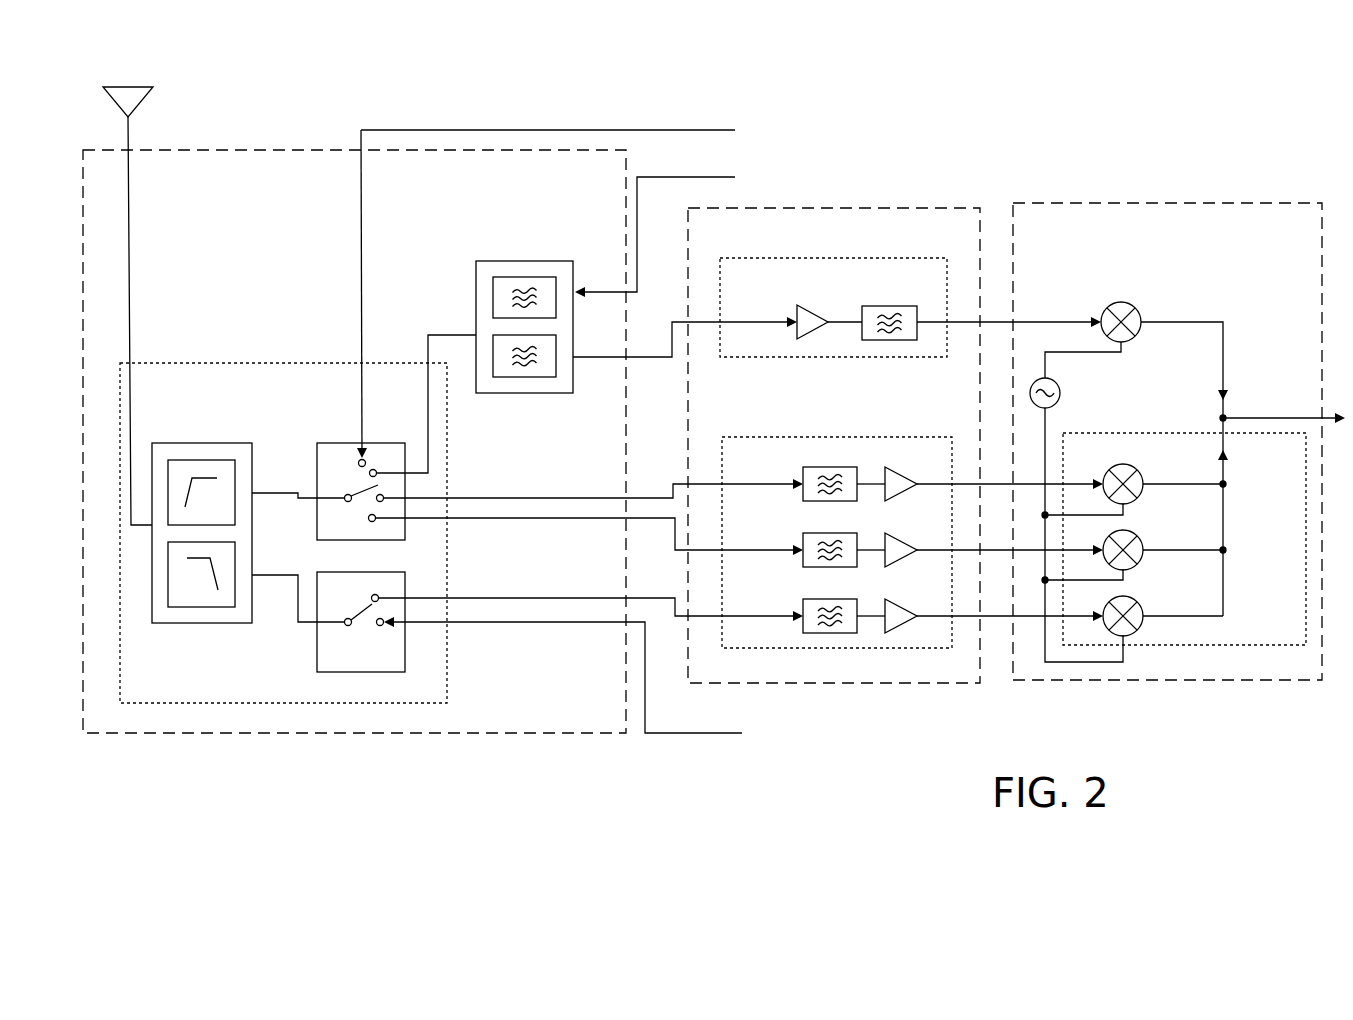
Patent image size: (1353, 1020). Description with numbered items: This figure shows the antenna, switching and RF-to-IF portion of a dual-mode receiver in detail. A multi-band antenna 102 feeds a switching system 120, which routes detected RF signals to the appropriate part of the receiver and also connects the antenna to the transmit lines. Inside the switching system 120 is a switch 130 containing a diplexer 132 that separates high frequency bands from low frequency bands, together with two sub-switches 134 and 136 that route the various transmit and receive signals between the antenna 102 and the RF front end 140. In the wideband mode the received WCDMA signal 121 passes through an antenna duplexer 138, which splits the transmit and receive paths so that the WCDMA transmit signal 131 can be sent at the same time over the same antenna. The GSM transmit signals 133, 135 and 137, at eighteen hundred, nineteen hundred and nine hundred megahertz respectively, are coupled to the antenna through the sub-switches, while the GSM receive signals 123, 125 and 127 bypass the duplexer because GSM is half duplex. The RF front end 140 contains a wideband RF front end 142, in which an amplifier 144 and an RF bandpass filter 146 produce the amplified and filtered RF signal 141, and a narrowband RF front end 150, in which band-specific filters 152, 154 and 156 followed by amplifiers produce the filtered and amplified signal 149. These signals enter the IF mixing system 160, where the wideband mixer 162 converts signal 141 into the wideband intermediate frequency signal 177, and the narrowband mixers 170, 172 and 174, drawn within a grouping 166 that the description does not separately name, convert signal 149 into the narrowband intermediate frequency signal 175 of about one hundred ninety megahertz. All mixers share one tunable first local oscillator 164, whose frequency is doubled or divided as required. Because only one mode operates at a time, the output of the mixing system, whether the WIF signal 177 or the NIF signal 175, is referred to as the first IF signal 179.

The multi-band antenna 102 is at (142, 98).
The switching system 120 is at (252, 150).
The received RF signal 121 is at (607, 357).
The 1800 MHz-band GSM signal 123 is at (573, 498).
The 1900 MHz-band GSM signal 125 is at (573, 518).
The 900 MHz-band GSM signal 127 is at (573, 598).
The switch 130 is at (148, 363).
The WCDMA transmit signal 131 is at (655, 223).
The diplexer 132 is at (168, 443).
The GSM transmit signal 133 is at (548, 115).
The sub-switch 134 is at (340, 443).
The GSM transmit signal 135 is at (548, 115).
The sub-switch 136 is at (317, 645).
The GSM transmit signal 137 is at (563, 675).
The antenna duplexer 138 is at (476, 293).
The RF front end 140 is at (833, 208).
The amplified and filtered RF signal 141 is at (963, 322).
The wideband RF front end 142 is at (752, 258).
The amplifier 144 is at (813, 304).
The RF bandpass filter 146 is at (913, 306).
The filtered and amplified signal 149 is at (963, 484).
The narrowband RF front end 150 is at (752, 437).
The filter 152 is at (820, 467).
The filter 154 is at (820, 533).
The filter 156 is at (820, 599).
The IF mixing system 160 is at (1060, 203).
The mixer 162 is at (1135, 304).
The first local oscillator 164 is at (1060, 388).
The mixer bank 166 is at (1130, 433).
The narrowband mixer 170 is at (1135, 470).
The narrowband mixer 172 is at (1135, 536).
The narrowband mixer 174 is at (1135, 602).
The narrowband intermediate frequency signal 175 is at (1223, 465).
The wideband intermediate frequency signal 177 is at (1223, 365).
The first IF signal 179 is at (1248, 418).